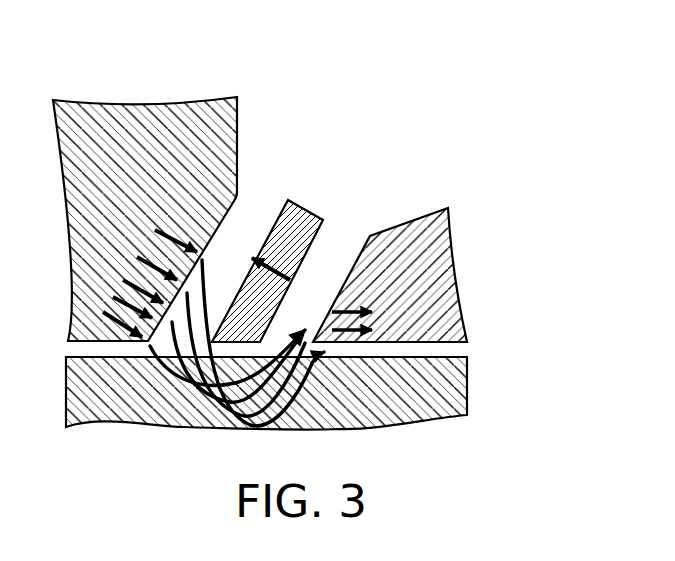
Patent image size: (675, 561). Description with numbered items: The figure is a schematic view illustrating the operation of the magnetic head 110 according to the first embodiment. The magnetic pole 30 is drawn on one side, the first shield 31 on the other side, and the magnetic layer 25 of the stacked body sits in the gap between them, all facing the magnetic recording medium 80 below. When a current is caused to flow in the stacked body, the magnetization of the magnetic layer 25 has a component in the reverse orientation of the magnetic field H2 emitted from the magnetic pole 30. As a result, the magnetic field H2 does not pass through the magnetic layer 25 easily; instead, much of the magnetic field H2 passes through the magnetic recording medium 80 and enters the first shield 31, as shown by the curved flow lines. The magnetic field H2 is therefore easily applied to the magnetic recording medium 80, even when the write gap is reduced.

The magnetic head 110 is at (265, 257).
The magnetic pole 30 is at (147, 146).
The magnetic layer 25 is at (301, 222).
The first shield 31 is at (405, 250).
The magnetic recording medium 80 is at (417, 397).
The magnetic field H2 is at (202, 287).